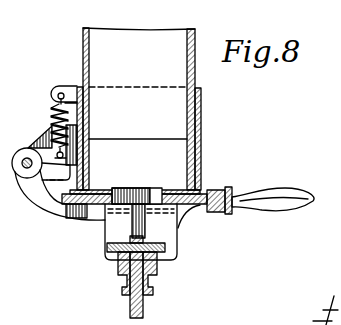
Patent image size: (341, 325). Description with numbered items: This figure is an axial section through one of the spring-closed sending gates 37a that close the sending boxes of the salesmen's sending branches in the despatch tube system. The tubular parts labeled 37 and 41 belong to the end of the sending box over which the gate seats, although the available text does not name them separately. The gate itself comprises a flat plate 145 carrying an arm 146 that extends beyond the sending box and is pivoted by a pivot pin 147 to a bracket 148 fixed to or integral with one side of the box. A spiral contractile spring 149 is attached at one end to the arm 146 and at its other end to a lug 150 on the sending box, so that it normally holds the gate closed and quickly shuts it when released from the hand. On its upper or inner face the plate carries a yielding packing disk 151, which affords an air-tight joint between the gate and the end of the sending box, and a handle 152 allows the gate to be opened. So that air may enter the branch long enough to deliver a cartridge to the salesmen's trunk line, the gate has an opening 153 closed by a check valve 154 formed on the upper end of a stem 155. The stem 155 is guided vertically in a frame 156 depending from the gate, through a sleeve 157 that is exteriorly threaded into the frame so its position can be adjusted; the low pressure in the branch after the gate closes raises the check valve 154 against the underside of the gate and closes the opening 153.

The inner tube 41 is at (137, 37).
The outer tube 37 is at (201, 141).
The sending gate 37a is at (191, 217).
The flat plate 145 is at (83, 203).
The arm 146 is at (40, 201).
The pivot pin 147 is at (22, 150).
The bracket 148 is at (42, 140).
The spiral contractile spring 149 is at (52, 110).
The lug 150 is at (68, 91).
The yielding packing disk 151 is at (100, 190).
The handle 152 is at (268, 200).
The opening 153 is at (143, 192).
The check valve 154 is at (117, 254).
The stem 155 is at (143, 306).
The frame 156 is at (178, 257).
The sleeve 157 is at (125, 285).